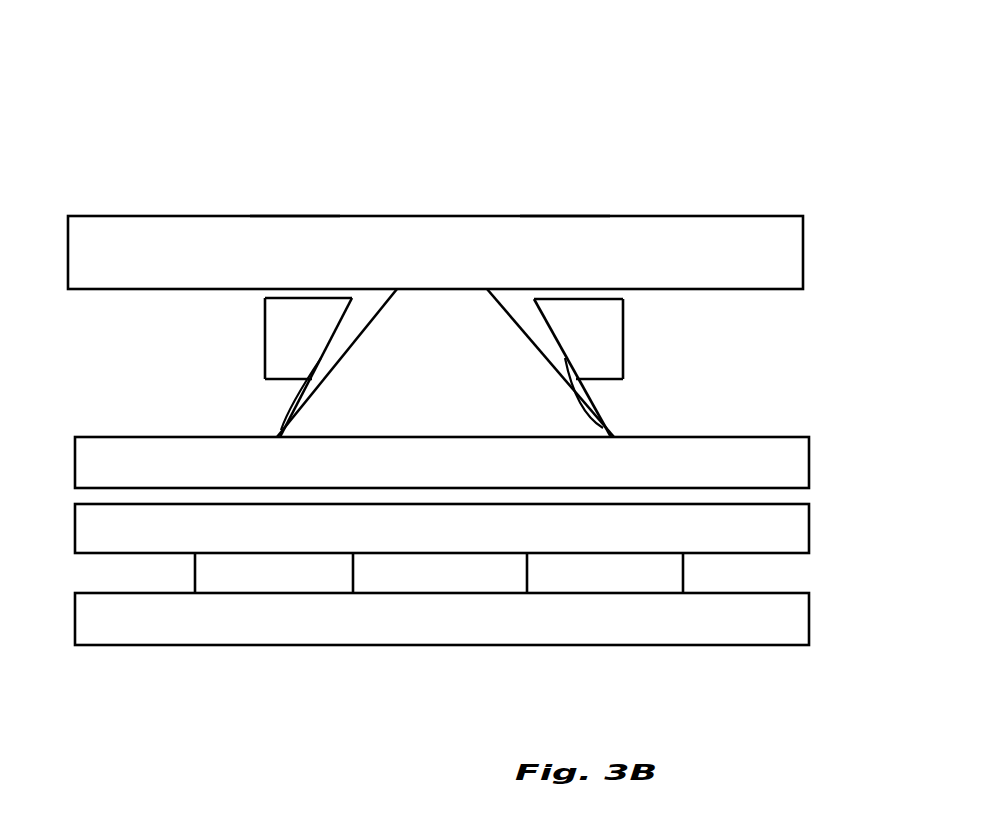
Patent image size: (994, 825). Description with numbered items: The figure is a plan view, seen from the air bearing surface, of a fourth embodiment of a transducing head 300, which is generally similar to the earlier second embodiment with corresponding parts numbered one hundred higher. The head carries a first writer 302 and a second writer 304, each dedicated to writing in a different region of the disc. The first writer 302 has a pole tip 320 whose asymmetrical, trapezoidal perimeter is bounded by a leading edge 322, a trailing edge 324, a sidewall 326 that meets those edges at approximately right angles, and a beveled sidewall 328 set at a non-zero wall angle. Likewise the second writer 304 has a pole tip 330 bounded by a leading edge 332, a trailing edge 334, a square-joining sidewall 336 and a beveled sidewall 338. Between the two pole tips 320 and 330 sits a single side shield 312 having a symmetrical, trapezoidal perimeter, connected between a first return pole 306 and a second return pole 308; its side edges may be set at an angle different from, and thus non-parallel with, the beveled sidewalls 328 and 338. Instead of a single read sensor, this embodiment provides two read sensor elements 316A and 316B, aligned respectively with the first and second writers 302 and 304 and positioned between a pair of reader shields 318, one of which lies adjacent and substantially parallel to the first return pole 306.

The transducing head 300 is at (486, 103).
The first writer 302 is at (566, 188).
The second writer 304 is at (296, 192).
The first return pole 306 is at (793, 467).
The second return pole 308 is at (783, 245).
The side shield 312 is at (445, 363).
The read sensor element 316A is at (565, 577).
The read sensor element 316B is at (242, 573).
The reader shields 318 is at (800, 542).
The pole tip 320 is at (614, 340).
The leading edge 322 is at (595, 380).
The trailing edge 324 is at (594, 300).
The sidewall 326 is at (623, 358).
The beveled sidewall 328 is at (581, 391).
The pole tip 330 is at (290, 355).
The leading edge 332 is at (280, 381).
The trailing edge 334 is at (267, 297).
The sidewall 336 is at (264, 331).
The beveled sidewall 338 is at (293, 408).